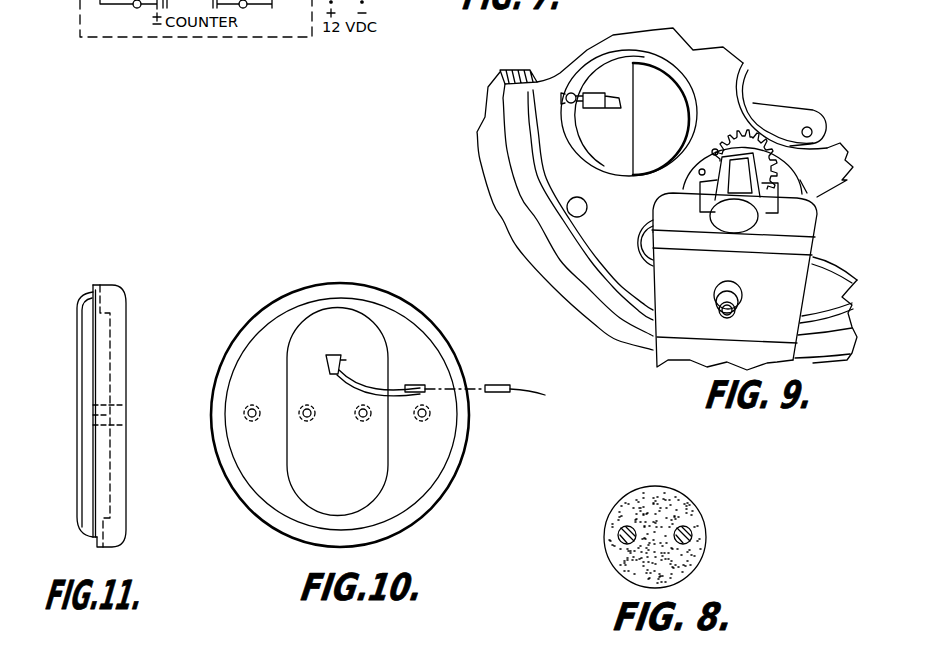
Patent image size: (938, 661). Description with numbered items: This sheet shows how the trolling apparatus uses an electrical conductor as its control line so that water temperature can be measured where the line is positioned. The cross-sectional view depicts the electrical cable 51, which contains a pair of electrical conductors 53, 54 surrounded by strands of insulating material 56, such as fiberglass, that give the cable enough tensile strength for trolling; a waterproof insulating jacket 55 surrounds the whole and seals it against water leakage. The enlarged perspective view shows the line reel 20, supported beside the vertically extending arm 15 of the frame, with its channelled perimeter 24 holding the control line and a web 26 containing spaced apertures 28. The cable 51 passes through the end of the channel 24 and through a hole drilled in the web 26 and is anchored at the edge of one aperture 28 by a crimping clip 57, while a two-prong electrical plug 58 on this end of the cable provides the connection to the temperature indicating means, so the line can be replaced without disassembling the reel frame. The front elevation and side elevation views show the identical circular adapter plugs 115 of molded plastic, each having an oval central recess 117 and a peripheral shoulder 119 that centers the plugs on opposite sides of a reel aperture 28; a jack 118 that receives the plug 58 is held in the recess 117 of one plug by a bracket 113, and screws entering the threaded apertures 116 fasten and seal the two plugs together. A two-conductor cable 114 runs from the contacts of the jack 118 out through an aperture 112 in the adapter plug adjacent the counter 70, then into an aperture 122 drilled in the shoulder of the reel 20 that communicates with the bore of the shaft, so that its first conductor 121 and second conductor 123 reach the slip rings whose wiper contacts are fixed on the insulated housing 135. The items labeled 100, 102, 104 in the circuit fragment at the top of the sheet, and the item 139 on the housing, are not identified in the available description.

In FIG. 7, the switch contact 100 is at (113, 5).
In FIG. 7, the switch 102 is at (147, 7).
In FIG. 7, the counter terminal 104 is at (257, 7).
In FIG. 9, the vertically extending arm 15 is at (787, 223).
In FIG. 9, the line reel 20 is at (490, 188).
In FIG. 9, the channelled perimeter 24 is at (498, 85).
In FIG. 9, the web 26 is at (627, 215).
In FIG. 9, the spaced apertures 28 is at (613, 70).
In FIG. 9, the electrical cable 51 is at (578, 96).
In FIG. 8, the electrical cable 51 is at (605, 512).
In FIG. 8, the electrical conductor 53 is at (627, 535).
In FIG. 8, the electrical conductor 54 is at (683, 537).
In FIG. 8, the insulating jacket 55 is at (700, 504).
In FIG. 8, the strands of insulating material 56 is at (652, 520).
In FIG. 9, the crimping clip 57 is at (570, 104).
In FIG. 9, the two-prong electrical plug 58 is at (607, 114).
In FIG. 9, the counter 70 is at (736, 221).
In FIG. 10, the aperture in the adapter plug 112 is at (430, 392).
In FIG. 10, the bracket 113 is at (328, 365).
In FIG. 10, the two-conductor cable 114 is at (398, 386).
In FIG. 10, the circular adapter plugs 115 is at (275, 296).
In FIG. 11, the circular adapter plugs 115 is at (127, 290).
In FIG. 10, the threaded apertures 116 is at (248, 410).
In FIG. 11, the threaded apertures 116 is at (95, 417).
In FIG. 10, the oval central recess 117 is at (318, 315).
In FIG. 11, the oval central recess 117 is at (108, 370).
In FIG. 10, the jack 118 is at (337, 357).
In FIG. 10, the peripheral shoulder 119 is at (417, 317).
In FIG. 11, the peripheral shoulder 119 is at (92, 288).
In FIG. 10, the first conductor 121 is at (512, 388).
In FIG. 9, the aperture in the shoulder of the reel 122 is at (704, 169).
In FIG. 10, the second conductor 123 is at (538, 394).
In FIG. 9, the insulated housing 135 is at (780, 322).
In FIG. 9, the push button 139 is at (731, 293).